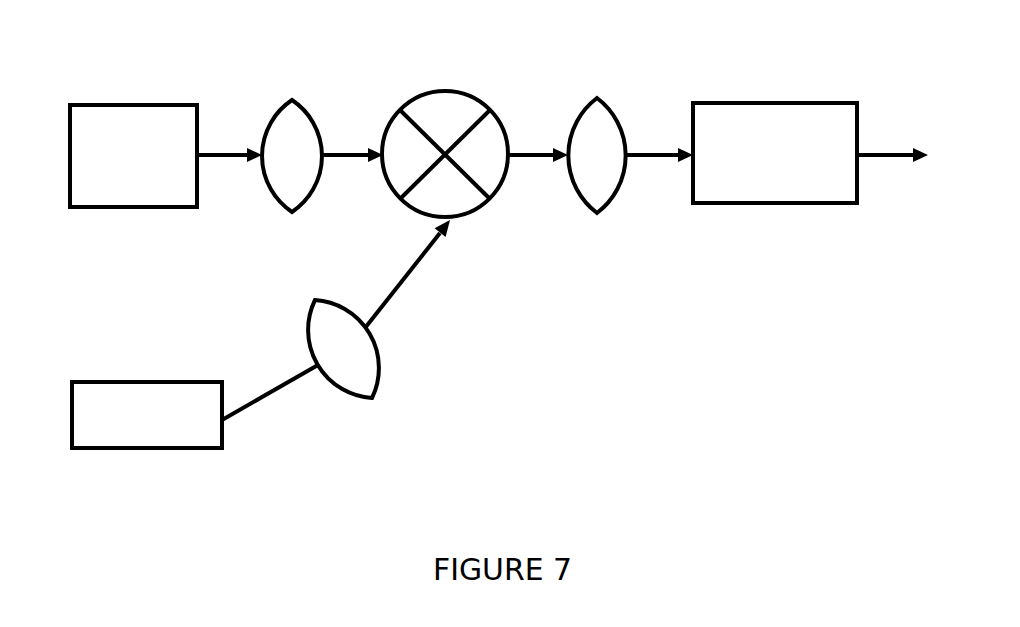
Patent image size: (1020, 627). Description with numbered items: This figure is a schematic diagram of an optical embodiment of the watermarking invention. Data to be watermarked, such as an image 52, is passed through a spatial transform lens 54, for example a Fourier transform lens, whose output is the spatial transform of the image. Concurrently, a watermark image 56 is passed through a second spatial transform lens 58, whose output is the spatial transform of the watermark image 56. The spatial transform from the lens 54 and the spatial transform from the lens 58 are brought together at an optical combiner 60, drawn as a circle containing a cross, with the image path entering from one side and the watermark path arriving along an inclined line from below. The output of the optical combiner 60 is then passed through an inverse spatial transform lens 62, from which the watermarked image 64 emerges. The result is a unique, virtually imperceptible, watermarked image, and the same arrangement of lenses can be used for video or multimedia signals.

The image 52 is at (160, 105).
The spatial transform lens 54 is at (303, 108).
The watermark image 56 is at (180, 382).
The second spatial transform lens 58 is at (376, 353).
The optical combiner 60 is at (452, 86).
The inverse spatial transform lens 62 is at (610, 112).
The watermarked image 64 is at (765, 103).